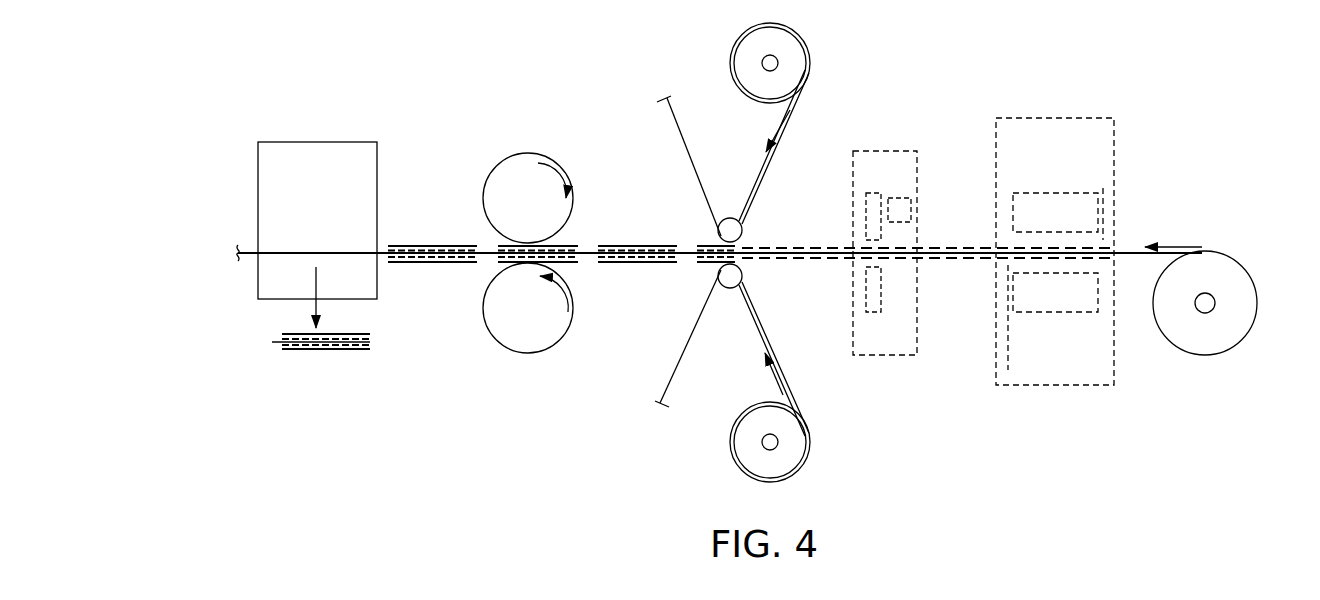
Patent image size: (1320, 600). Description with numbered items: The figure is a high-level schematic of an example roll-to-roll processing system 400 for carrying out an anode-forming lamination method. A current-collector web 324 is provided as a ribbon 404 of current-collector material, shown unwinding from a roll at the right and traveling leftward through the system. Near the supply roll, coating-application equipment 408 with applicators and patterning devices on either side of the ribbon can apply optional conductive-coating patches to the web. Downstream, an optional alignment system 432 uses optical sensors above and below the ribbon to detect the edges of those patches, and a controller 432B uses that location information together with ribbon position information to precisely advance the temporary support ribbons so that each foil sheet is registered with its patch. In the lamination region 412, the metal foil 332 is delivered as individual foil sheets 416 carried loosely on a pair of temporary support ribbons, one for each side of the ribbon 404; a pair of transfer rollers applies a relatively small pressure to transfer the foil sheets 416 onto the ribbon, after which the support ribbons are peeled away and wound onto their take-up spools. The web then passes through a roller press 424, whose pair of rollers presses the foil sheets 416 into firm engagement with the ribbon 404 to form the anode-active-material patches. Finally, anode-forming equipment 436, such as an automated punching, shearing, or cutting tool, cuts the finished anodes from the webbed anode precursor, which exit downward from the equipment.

The roll-to-roll processing system 400 is at (325, 47).
The current-collector web 324 is at (719, 253).
The ribbon of current-collector material 404 is at (1132, 250).
The coating-application equipment 408 is at (1023, 117).
The lamination region 412 is at (568, 95).
The foil sheets 416 is at (700, 262).
The roller press 424 is at (490, 358).
The alignment system 432 is at (921, 321).
The controller 432B is at (912, 210).
The anode-forming equipment 436 is at (258, 182).
The metal foil 332 is at (700, 245).